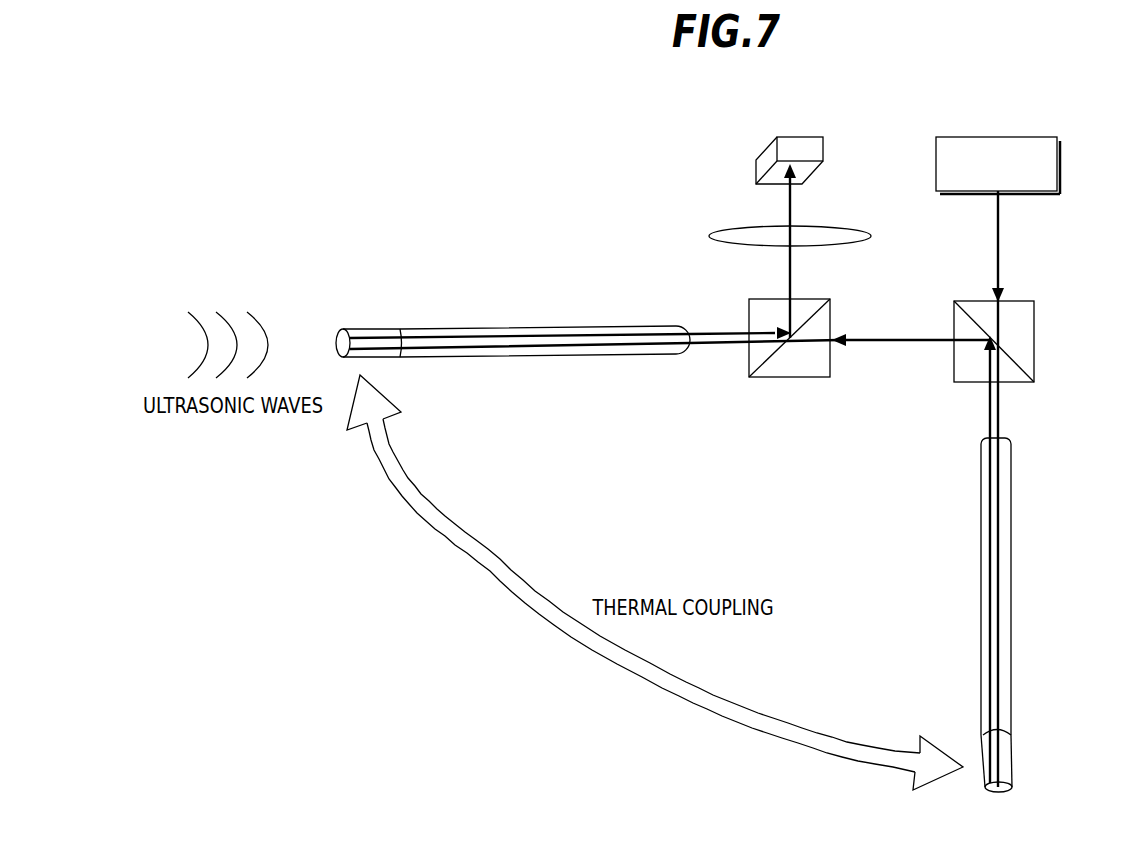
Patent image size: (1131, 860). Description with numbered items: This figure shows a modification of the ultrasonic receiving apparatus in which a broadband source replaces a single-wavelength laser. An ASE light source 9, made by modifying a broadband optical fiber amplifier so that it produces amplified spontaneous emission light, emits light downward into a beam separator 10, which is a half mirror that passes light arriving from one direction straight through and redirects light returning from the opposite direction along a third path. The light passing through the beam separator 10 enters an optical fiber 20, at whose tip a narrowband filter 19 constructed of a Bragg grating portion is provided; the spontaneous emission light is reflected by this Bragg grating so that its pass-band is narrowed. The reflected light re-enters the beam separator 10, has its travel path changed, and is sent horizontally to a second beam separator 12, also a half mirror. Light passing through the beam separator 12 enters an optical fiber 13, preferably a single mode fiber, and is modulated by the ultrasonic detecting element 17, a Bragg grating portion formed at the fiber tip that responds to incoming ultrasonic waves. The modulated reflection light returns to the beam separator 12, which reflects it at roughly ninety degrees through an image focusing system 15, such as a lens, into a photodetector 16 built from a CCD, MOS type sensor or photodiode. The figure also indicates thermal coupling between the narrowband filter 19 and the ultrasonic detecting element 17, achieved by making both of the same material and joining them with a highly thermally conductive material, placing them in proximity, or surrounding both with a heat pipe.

The ASE light source 9 is at (1058, 152).
The beam separator 10 is at (1025, 347).
The beam separator 12 is at (783, 368).
The optical fiber 13 is at (580, 330).
The image focusing system 15 is at (860, 228).
The photodetector 16 is at (812, 134).
The ultrasonic detecting element 17 is at (373, 332).
The narrowband filter 19 is at (1012, 757).
The optical fiber 20 is at (1008, 550).